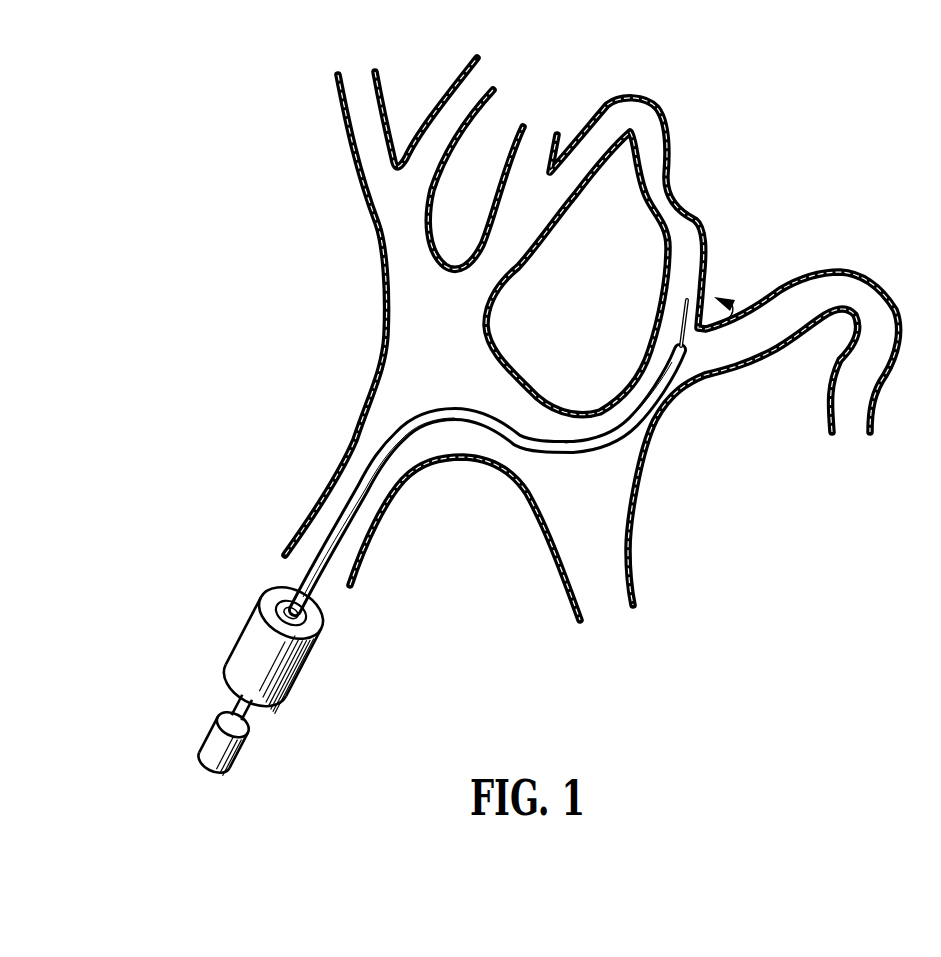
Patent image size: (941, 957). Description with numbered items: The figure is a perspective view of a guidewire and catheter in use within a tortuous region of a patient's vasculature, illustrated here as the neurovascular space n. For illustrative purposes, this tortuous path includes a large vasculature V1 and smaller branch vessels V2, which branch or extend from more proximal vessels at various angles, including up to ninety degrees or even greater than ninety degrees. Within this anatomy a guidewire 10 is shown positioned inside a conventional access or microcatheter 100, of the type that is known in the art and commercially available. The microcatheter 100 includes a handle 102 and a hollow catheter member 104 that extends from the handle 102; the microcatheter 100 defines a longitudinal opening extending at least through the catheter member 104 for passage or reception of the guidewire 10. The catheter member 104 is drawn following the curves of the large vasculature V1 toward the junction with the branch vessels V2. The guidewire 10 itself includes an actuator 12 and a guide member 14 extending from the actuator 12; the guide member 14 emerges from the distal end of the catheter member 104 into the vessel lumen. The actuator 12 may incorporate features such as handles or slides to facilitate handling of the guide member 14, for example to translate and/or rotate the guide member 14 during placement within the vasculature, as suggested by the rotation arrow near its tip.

The guidewire 10 is at (222, 700).
The actuator 12 is at (197, 737).
The guide member 14 is at (690, 330).
The microcatheter 100 is at (481, 447).
The handle 102 is at (247, 636).
The hollow catheter member 104 is at (308, 572).
The neurovascular space n is at (300, 183).
The large vasculature V1 is at (382, 322).
The smaller branch vessels V2 is at (863, 270).